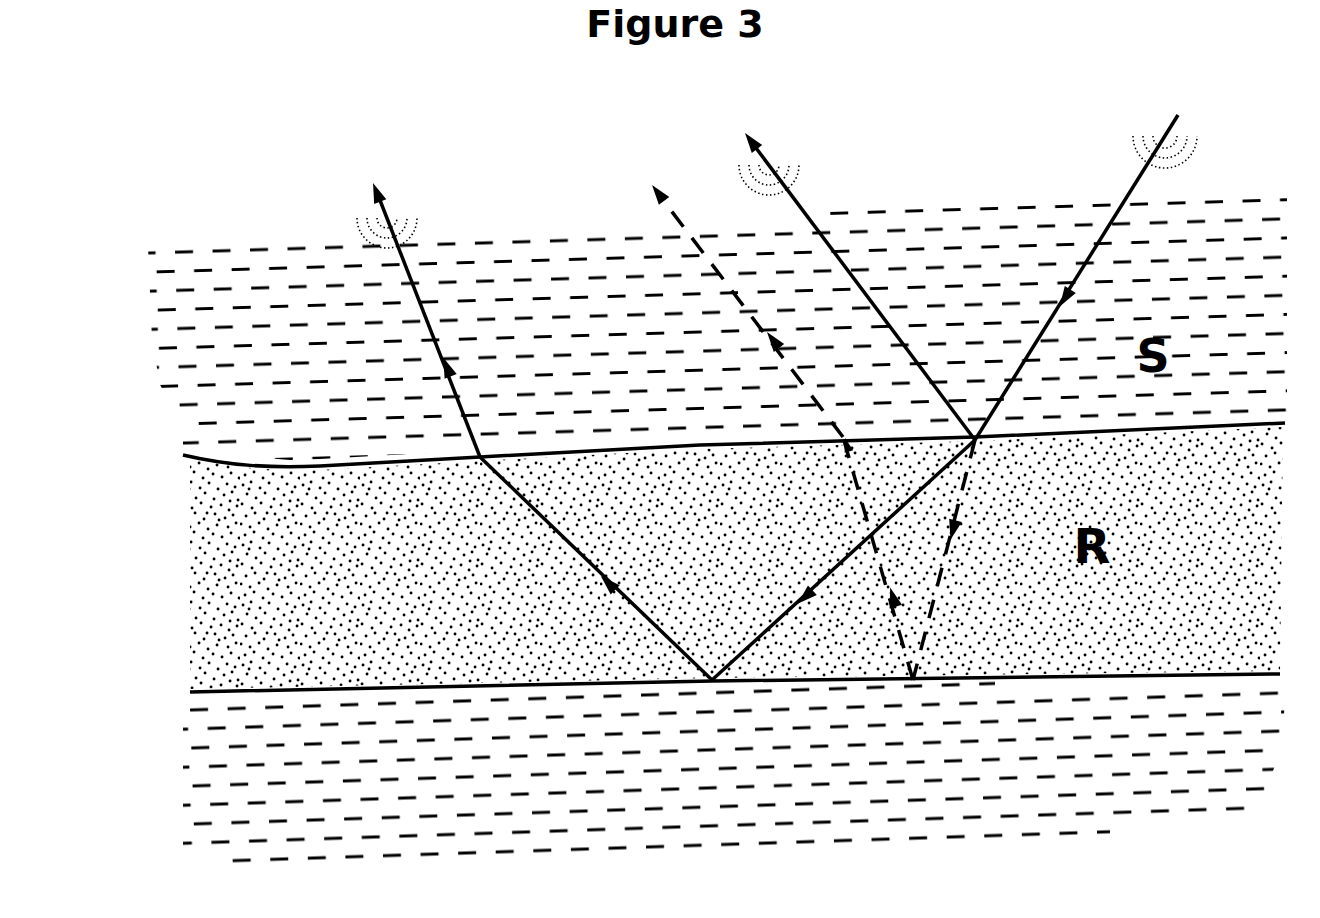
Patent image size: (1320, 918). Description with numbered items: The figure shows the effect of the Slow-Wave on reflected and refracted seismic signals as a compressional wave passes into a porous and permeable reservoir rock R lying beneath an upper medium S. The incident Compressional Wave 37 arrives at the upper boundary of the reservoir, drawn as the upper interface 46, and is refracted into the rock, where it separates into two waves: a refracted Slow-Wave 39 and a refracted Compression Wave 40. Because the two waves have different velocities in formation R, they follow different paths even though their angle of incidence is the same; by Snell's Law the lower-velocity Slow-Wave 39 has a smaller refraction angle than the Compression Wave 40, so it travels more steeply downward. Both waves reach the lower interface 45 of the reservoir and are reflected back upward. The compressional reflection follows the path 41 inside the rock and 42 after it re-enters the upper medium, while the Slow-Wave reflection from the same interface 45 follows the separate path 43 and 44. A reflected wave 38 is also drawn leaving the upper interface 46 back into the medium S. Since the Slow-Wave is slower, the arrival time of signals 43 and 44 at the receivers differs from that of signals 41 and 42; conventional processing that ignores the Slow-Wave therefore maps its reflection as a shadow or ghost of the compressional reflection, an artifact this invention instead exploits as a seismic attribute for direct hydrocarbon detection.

The Compressional Wave 37 is at (1100, 266).
The reflected wave 38 is at (857, 286).
The refracted Slow-Wave 39 is at (945, 560).
The refracted Compression Wave 40 is at (843, 560).
The Compressional Wave reflected signal 41 is at (596, 568).
The Compressional Wave reflected signal 42 is at (418, 320).
The Slow-Wave reflected signal 43 is at (878, 558).
The Slow-Wave reflected signal 44 is at (747, 311).
The lower interface 45 is at (735, 669).
The upper interface between S and R 46 is at (734, 445).